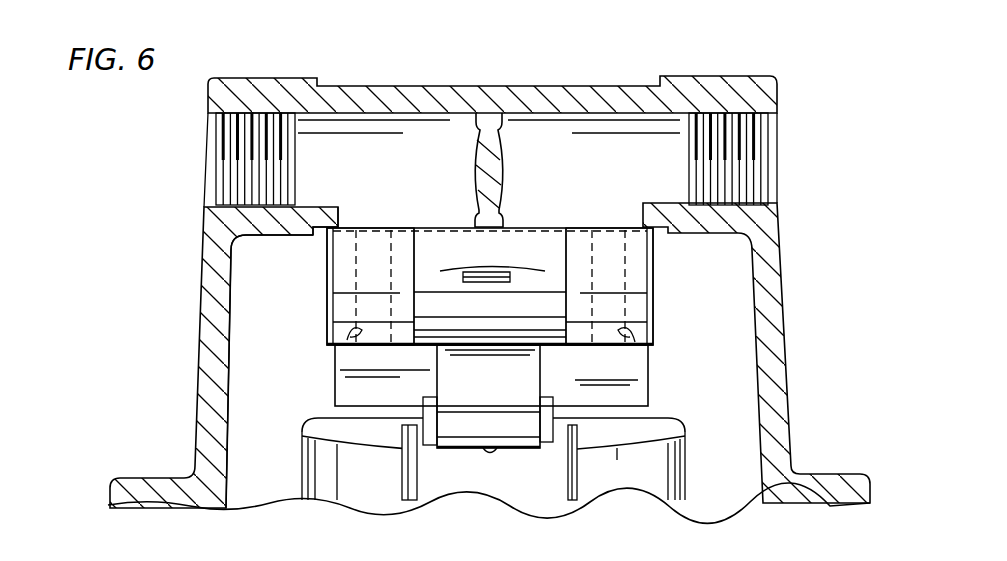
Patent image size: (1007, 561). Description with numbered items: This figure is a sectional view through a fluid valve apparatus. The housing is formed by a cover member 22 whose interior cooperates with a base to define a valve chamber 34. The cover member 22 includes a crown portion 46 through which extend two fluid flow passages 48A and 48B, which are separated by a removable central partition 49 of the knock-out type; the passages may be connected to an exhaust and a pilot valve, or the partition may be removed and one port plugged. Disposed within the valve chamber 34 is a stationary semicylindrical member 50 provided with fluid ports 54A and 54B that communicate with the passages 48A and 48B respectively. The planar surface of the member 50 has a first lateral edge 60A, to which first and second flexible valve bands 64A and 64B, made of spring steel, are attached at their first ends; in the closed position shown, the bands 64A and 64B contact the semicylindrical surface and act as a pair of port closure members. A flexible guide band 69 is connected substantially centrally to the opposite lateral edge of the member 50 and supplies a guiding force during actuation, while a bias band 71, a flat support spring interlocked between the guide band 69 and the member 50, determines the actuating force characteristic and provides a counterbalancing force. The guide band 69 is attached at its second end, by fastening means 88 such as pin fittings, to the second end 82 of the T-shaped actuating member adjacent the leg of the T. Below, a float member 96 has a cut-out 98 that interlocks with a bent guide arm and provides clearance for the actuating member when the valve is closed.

The cover member 22 is at (782, 308).
The valve chamber 34 is at (247, 279).
The crown portion 46 is at (485, 87).
The fluid flow passage 48A is at (778, 138).
The fluid flow passage 48B is at (208, 145).
The removable central partition 49 is at (498, 163).
The stationary semicylindrical member 50 is at (655, 283).
The fluid port 54A is at (353, 330).
The fluid port 54B is at (653, 342).
The first lateral edge 60A is at (372, 226).
The first flexible valve band 64A is at (347, 311).
The second flexible valve band 64B is at (640, 317).
The guide band 69 is at (488, 425).
The bias band 71 is at (520, 387).
The second end of the actuating member 82 is at (548, 440).
The fastening means 88 is at (487, 452).
The float member 96 is at (685, 478).
The cut-out 98 is at (577, 490).